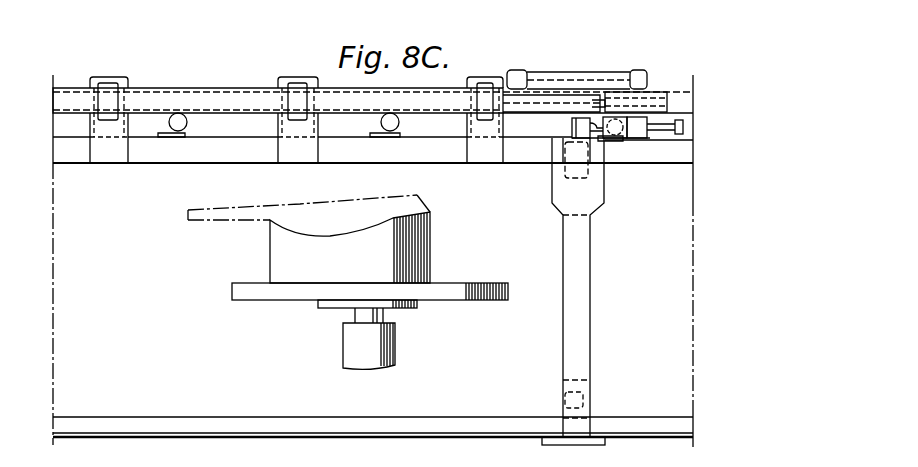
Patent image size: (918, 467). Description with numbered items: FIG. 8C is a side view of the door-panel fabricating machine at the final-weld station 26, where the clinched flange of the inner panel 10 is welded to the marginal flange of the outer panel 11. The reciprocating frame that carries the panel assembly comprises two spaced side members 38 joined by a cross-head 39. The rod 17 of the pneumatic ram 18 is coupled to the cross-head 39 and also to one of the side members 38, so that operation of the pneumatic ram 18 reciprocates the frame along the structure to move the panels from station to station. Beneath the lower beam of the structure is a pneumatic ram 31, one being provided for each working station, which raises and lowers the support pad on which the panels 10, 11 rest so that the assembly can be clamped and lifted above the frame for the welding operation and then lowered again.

The pneumatic ram 18 is at (218, 65).
The side member 38 is at (152, 105).
The cross-head 39 is at (524, 70).
The rod 17 is at (555, 100).
The inner panel 10 is at (272, 183).
The outer panel 11 is at (270, 212).
The final-weld station 26 is at (243, 263).
The pneumatic ram 31 is at (353, 335).